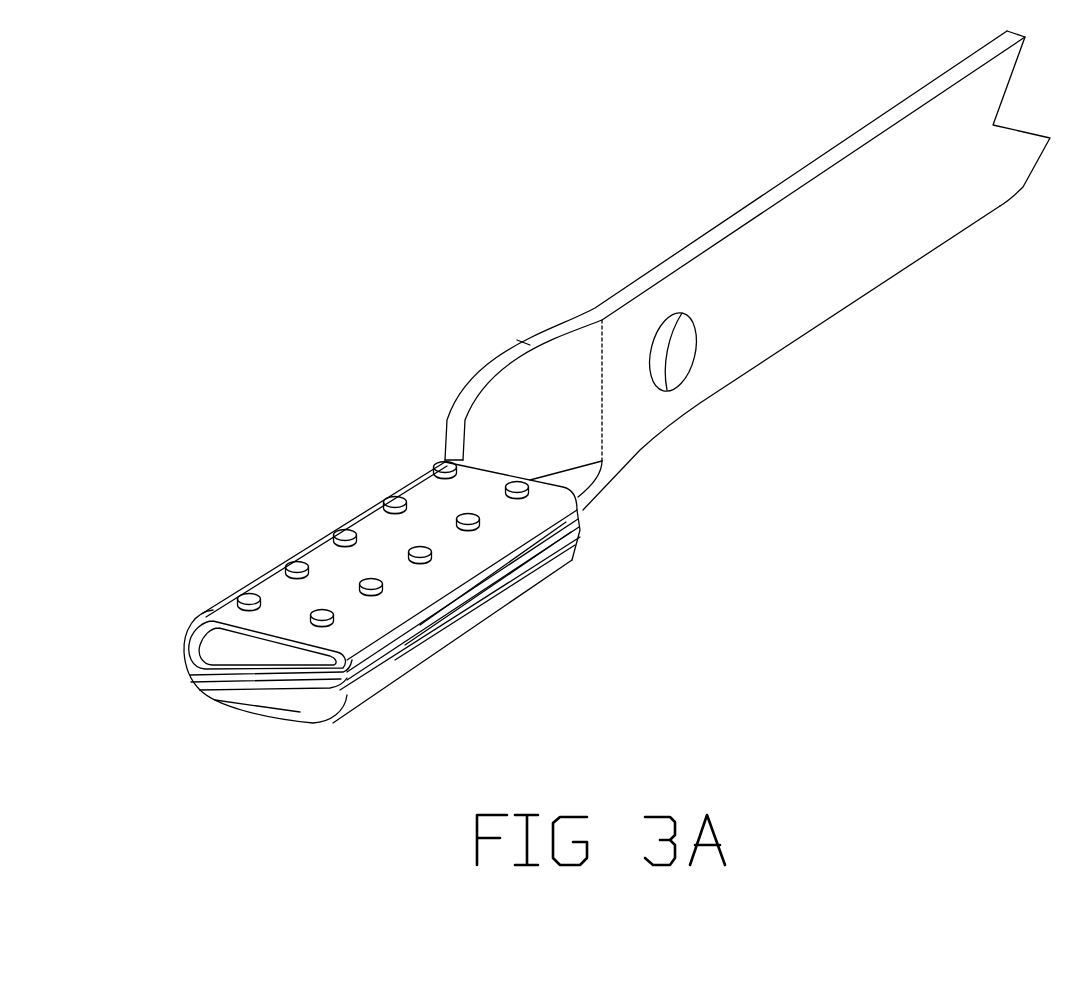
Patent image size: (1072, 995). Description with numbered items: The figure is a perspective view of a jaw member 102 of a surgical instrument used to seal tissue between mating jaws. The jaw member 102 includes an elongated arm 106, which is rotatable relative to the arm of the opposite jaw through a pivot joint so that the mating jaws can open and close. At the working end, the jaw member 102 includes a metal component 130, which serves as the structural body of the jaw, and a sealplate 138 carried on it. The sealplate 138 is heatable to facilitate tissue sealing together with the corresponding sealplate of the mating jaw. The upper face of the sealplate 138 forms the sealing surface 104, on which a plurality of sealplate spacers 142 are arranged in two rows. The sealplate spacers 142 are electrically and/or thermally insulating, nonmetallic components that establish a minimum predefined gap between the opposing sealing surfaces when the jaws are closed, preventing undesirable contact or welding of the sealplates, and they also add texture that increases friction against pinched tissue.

The jaw member 102 is at (303, 180).
The sealing surface 104 is at (317, 410).
The arm 106 is at (855, 263).
The metal component 130 is at (415, 655).
The sealplate 138 is at (391, 566).
The sealplate spacers 142 is at (433, 467).